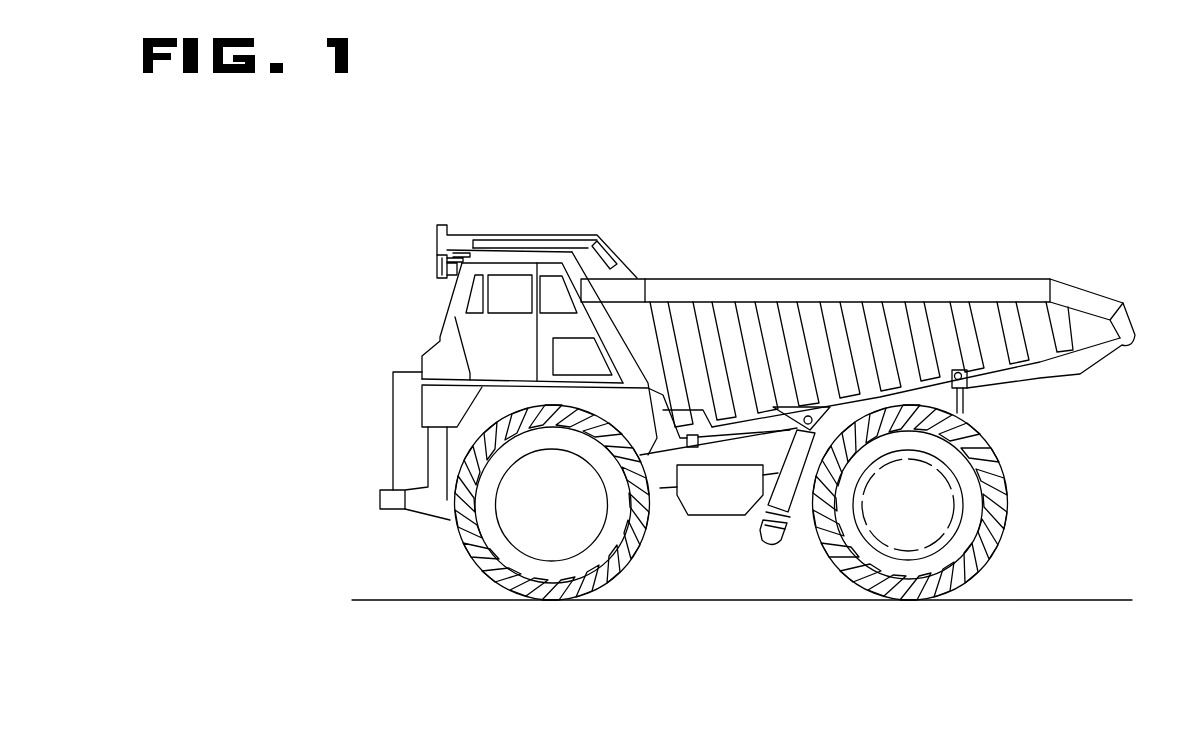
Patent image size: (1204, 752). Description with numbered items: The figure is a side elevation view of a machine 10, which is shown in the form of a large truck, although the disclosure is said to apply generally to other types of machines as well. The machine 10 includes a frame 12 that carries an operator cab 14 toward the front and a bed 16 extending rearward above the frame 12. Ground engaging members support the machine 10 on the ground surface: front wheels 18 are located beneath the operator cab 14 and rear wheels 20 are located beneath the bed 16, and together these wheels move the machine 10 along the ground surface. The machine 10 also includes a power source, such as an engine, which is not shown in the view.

The machine 10 is at (1128, 145).
The frame 12 is at (673, 490).
The operator cab 14 is at (445, 298).
The bed 16 is at (860, 279).
The front wheels 18 is at (542, 573).
The rear wheels 20 is at (928, 573).